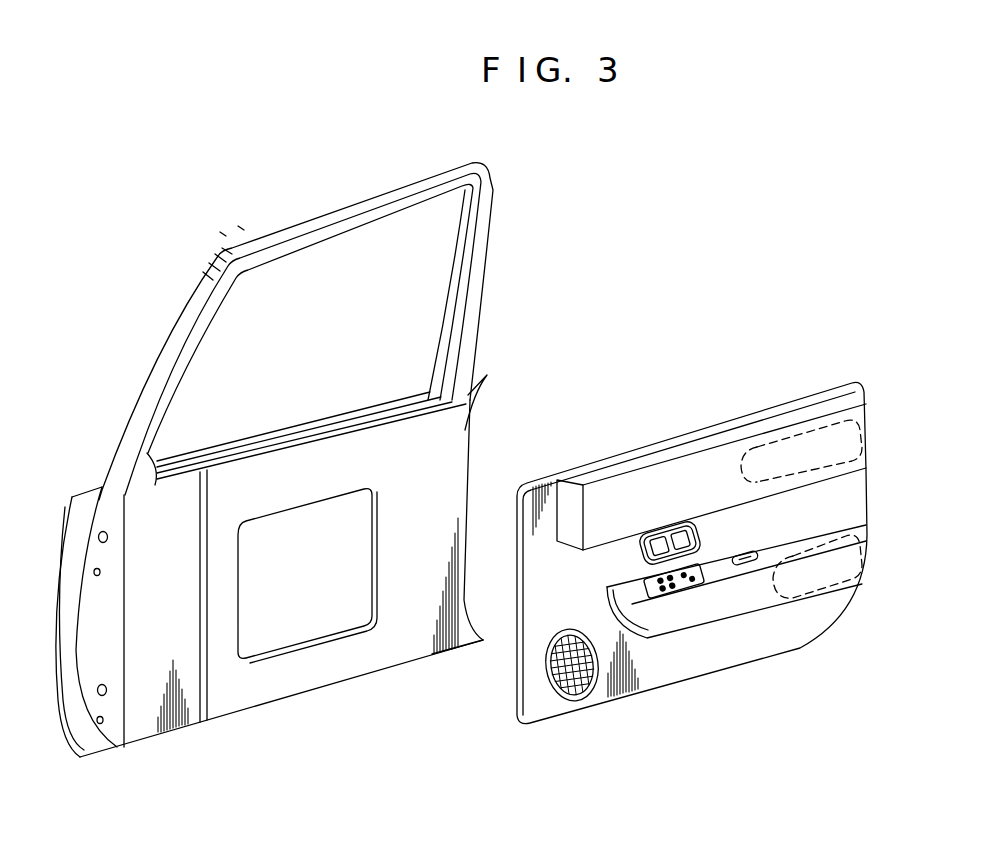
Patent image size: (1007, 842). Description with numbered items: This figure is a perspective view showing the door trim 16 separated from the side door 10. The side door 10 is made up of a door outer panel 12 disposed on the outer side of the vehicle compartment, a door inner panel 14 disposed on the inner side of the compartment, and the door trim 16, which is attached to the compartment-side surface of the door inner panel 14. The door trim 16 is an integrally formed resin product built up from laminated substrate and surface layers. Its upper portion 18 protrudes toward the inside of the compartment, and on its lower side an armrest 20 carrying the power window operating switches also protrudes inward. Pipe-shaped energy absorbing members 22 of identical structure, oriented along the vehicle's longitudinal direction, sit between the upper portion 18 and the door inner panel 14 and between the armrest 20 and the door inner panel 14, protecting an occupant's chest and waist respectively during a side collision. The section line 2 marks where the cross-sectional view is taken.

The side door 10 is at (692, 233).
The door outer panel 12 is at (252, 437).
The door inner panel 14 is at (140, 718).
The door trim 16 is at (782, 405).
The upper portion 18 is at (615, 498).
The armrest 20 is at (733, 607).
The energy absorbing member 22 is at (823, 427).
The section line 2- 2 is at (670, 410).